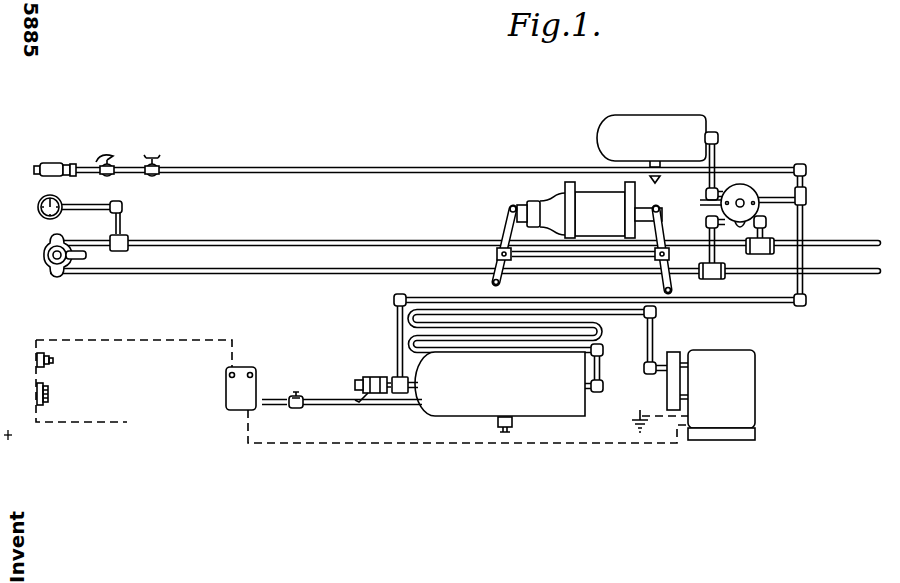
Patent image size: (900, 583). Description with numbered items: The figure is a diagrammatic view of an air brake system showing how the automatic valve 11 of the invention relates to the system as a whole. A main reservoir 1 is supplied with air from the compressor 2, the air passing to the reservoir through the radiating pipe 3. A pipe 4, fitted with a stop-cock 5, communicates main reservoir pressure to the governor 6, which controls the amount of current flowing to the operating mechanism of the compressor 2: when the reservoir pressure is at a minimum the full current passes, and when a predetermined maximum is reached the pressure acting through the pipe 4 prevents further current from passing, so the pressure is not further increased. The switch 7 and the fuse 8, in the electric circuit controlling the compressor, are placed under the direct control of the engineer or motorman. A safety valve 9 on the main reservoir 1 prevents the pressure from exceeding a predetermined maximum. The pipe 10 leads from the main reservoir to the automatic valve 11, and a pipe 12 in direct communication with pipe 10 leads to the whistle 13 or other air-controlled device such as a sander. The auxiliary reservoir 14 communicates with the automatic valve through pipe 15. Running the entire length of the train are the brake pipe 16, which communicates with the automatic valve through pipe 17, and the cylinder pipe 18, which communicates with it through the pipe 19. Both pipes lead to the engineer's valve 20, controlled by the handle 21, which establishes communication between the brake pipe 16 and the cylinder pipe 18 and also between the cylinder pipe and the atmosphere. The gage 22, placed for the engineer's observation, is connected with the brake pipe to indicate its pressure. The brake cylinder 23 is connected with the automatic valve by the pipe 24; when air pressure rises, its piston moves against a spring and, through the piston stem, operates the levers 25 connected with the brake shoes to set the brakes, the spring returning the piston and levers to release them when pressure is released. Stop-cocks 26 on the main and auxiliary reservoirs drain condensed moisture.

The main reservoir 1 is at (455, 406).
The compressor 2 is at (745, 386).
The radiating pipe 3 is at (622, 316).
The pipe 4 is at (336, 407).
The stop-cock 5 is at (298, 396).
The governor 6 is at (244, 372).
The switch 7 is at (51, 355).
The fuse 8 is at (48, 396).
The safety valve 9 is at (374, 377).
The pipe 10 is at (768, 303).
The automatic valve 11 is at (745, 194).
The pipe 12 is at (425, 166).
The whistle 13 is at (63, 162).
The auxiliary reservoir 14 is at (655, 121).
The pipe 15 is at (716, 164).
The brake pipe 16 is at (292, 236).
The pipe 17 is at (763, 229).
The cylinder pipe 18 is at (824, 276).
The pipe 19 is at (716, 262).
The engineer's valve 20 is at (48, 259).
The handle 21 is at (63, 272).
The gage 22 is at (40, 216).
The brake cylinder 23 is at (590, 190).
The pipe 24 is at (690, 225).
The levers 25 is at (504, 231).
The stop-cocks 26 is at (504, 434).